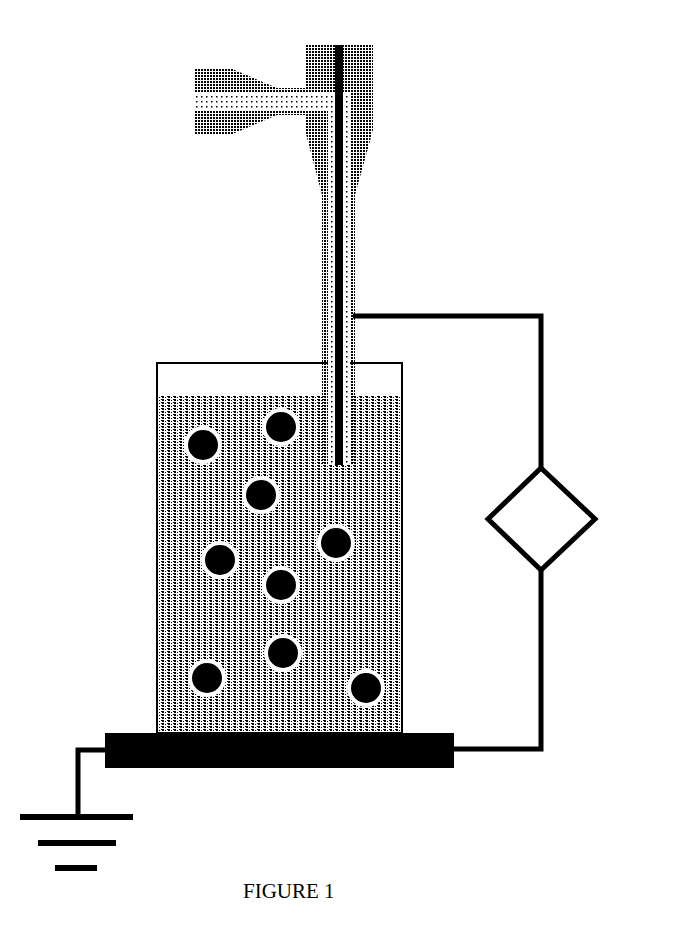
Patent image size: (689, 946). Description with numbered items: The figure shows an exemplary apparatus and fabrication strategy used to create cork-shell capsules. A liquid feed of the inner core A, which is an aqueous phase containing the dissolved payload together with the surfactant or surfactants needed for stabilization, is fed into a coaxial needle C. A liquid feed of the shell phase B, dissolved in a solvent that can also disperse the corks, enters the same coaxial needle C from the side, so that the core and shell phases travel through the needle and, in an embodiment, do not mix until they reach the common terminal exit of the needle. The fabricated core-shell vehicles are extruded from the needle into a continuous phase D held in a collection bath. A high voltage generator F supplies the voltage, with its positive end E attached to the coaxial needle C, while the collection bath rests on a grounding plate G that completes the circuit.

The liquid feed of the inner core A is at (337, 233).
The liquid feed of the shell phase B is at (243, 101).
The coaxial needle C is at (330, 255).
The continuous phase D is at (264, 548).
The positive end of the high voltage generator E is at (447, 371).
The high voltage generator F is at (541, 505).
The grounding plate G is at (280, 719).